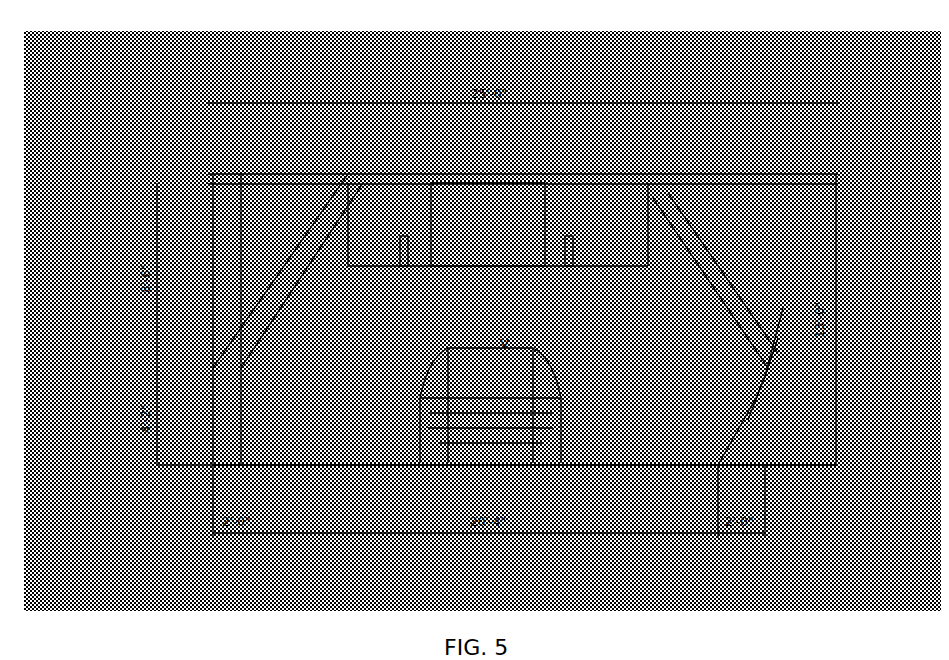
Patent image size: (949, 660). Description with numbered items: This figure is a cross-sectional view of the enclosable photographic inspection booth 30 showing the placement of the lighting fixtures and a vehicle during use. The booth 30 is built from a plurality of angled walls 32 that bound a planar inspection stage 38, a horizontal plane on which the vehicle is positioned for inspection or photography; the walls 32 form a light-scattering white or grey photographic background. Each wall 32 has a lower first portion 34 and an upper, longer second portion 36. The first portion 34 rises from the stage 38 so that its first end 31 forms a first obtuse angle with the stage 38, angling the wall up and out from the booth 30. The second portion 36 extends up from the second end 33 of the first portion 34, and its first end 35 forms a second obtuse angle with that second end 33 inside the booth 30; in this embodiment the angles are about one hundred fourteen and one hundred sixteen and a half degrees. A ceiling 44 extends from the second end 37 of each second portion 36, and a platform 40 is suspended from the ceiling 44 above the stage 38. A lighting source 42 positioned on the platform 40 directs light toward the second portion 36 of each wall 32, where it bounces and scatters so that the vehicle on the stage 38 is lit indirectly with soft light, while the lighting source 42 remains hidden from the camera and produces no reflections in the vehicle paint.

The enclosable photographic inspection booth 30 is at (796, 131).
The first end of the first portion 31 is at (712, 459).
The angled walls 32 is at (760, 368).
The second end of the first portion 33 is at (760, 371).
The first portion 34 is at (740, 412).
The first end of the second portion 35 is at (770, 300).
The second portion 36 is at (652, 197).
The second end of the second portion 37 is at (628, 168).
The planar stage 38 is at (606, 458).
The platform 40 is at (488, 258).
The lighting source 42 is at (395, 232).
The ceiling 44 is at (450, 168).